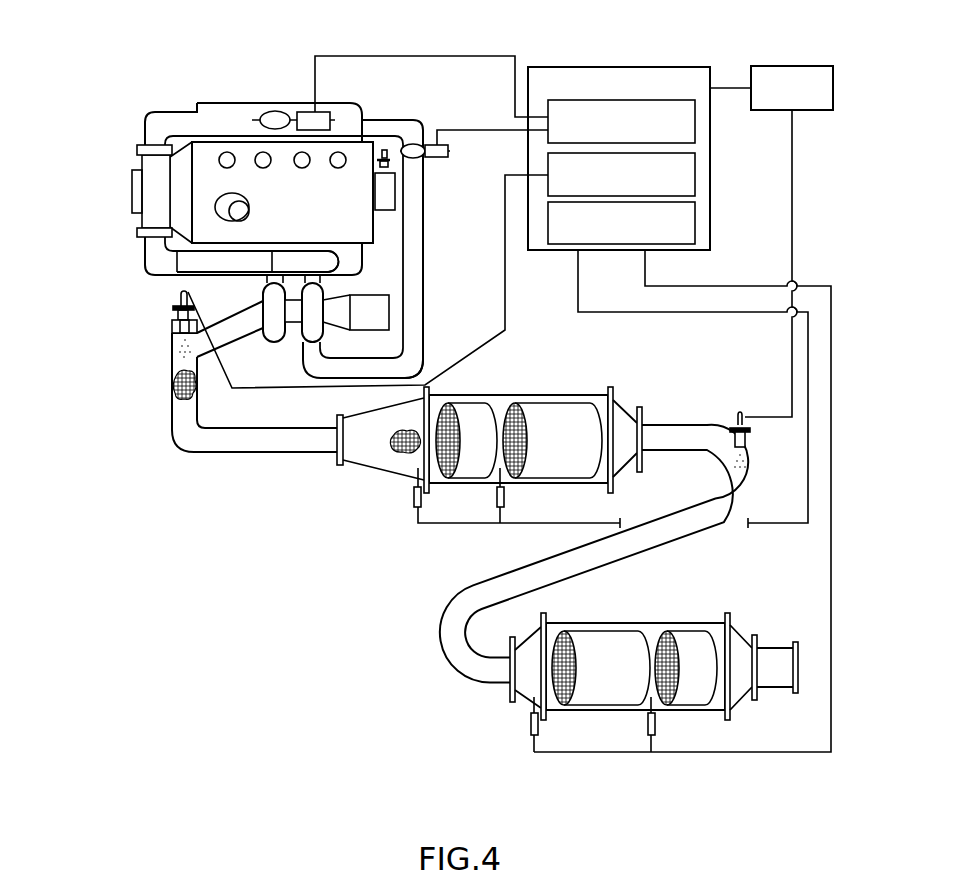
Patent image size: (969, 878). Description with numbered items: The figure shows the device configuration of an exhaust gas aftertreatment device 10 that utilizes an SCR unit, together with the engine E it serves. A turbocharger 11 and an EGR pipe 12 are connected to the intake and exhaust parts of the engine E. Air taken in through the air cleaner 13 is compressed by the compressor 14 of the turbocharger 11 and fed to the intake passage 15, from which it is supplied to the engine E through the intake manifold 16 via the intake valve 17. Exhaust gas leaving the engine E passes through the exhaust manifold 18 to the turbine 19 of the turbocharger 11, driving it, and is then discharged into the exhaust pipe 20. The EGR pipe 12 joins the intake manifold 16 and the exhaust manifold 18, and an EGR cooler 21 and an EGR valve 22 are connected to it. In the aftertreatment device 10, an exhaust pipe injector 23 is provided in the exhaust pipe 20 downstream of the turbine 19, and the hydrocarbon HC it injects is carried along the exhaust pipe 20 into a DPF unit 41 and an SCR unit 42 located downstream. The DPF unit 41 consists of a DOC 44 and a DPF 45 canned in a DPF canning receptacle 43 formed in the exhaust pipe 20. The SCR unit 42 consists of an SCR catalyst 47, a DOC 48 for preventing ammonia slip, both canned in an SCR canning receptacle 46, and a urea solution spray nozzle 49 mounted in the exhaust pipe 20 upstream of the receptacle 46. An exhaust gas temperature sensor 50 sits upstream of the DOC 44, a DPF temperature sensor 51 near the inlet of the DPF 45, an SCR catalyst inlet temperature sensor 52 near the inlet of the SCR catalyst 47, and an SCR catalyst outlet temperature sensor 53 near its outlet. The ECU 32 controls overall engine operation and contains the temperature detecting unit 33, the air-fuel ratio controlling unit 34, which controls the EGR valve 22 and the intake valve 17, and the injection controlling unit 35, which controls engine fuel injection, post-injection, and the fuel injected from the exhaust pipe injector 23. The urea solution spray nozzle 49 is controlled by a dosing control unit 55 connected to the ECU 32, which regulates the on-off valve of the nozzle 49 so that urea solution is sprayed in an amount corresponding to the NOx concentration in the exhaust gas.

The engine E is at (218, 142).
The exhaust gas aftertreatment device 10 is at (398, 577).
The turbocharger 11 is at (296, 341).
The EGR pipe 12 is at (147, 256).
The air cleaner 13 is at (389, 308).
The compressor 14 is at (323, 337).
The intake passage 15 is at (425, 336).
The intake manifold 16 is at (350, 104).
The intake valve 17 is at (414, 143).
The exhaust manifold 18 is at (365, 266).
The turbine 19 is at (263, 337).
The exhaust pipe 20 is at (172, 410).
The EGR cooler 21 is at (147, 164).
The EGR valve 22 is at (275, 110).
The exhaust pipe injector 23 is at (178, 301).
The hydrocarbon HC is at (175, 386).
The ECU 32 is at (622, 66).
The temperature detecting unit 33 is at (695, 227).
The air-fuel ratio controlling unit 34 is at (695, 129).
The injection controlling unit 35 is at (695, 178).
The DPF unit 41 is at (505, 420).
The SCR unit 42 is at (654, 650).
The DPF canning receptacle 43 is at (583, 395).
The DOC 44 is at (476, 405).
The DPF 45 is at (548, 405).
The SCR canning receptacle 46 is at (706, 623).
The SCR catalyst 47 is at (595, 632).
The DOC 48 is at (683, 629).
The urea solution spray nozzle 49 is at (740, 412).
The exhaust gas temperature sensor 50 is at (414, 501).
The DPF temperature sensor 51 is at (497, 501).
The SCR catalyst inlet temperature sensor 52 is at (531, 728).
The SCR catalyst outlet temperature sensor 53 is at (648, 731).
The dosing control unit (DCU) 55 is at (787, 66).